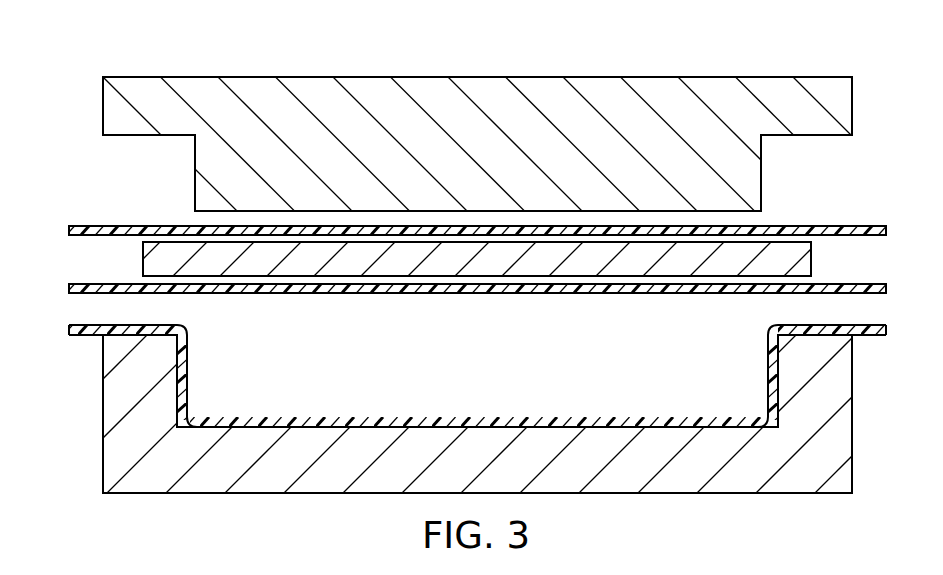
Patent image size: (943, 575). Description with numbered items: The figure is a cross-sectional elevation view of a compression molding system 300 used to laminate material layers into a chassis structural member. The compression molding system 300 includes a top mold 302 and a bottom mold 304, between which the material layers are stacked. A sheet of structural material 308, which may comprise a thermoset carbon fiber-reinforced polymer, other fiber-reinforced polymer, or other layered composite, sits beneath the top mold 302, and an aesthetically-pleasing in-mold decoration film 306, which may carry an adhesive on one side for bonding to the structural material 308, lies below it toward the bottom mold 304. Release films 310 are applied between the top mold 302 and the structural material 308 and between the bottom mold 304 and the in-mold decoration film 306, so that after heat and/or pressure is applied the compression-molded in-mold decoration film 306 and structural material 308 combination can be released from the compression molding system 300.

The compression molding system 300 is at (234, 61).
The top mold 302 is at (103, 103).
The bottom mold 304 is at (103, 402).
The in-mold decoration film 306 is at (527, 294).
The structural material 308 is at (143, 263).
The release films 310 is at (128, 226).